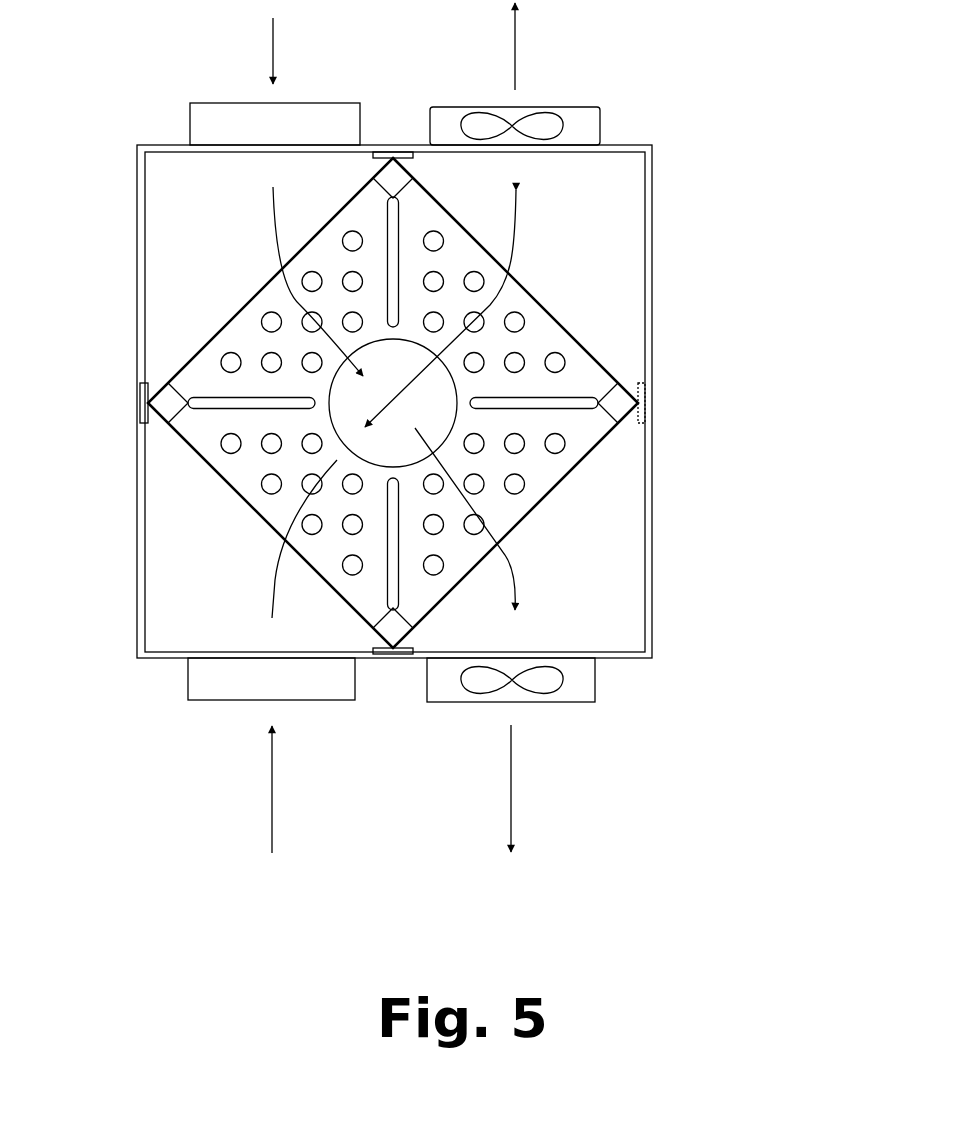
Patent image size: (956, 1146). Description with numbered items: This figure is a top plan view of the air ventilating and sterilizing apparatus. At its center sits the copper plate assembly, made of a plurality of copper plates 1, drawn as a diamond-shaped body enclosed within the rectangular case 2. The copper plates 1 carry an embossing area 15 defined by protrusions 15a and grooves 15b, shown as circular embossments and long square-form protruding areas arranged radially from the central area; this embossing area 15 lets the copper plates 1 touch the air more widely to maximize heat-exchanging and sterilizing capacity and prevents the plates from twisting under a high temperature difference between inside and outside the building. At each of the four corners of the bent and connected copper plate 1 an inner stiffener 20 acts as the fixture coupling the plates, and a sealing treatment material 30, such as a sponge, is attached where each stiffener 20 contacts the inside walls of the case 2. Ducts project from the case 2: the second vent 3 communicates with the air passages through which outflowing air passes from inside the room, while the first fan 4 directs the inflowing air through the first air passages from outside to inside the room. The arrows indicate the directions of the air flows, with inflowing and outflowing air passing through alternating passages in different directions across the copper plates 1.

The copper plate 1 is at (381, 389).
The case 2 is at (652, 475).
The second vent 3 is at (315, 700).
The first fan 4 is at (600, 690).
The through holes 15 is at (317, 403).
The protrusions 15a is at (270, 312).
The grooves 15b is at (213, 395).
The inner stiffener 20 is at (642, 378).
The sealing treatment material 30 is at (652, 405).